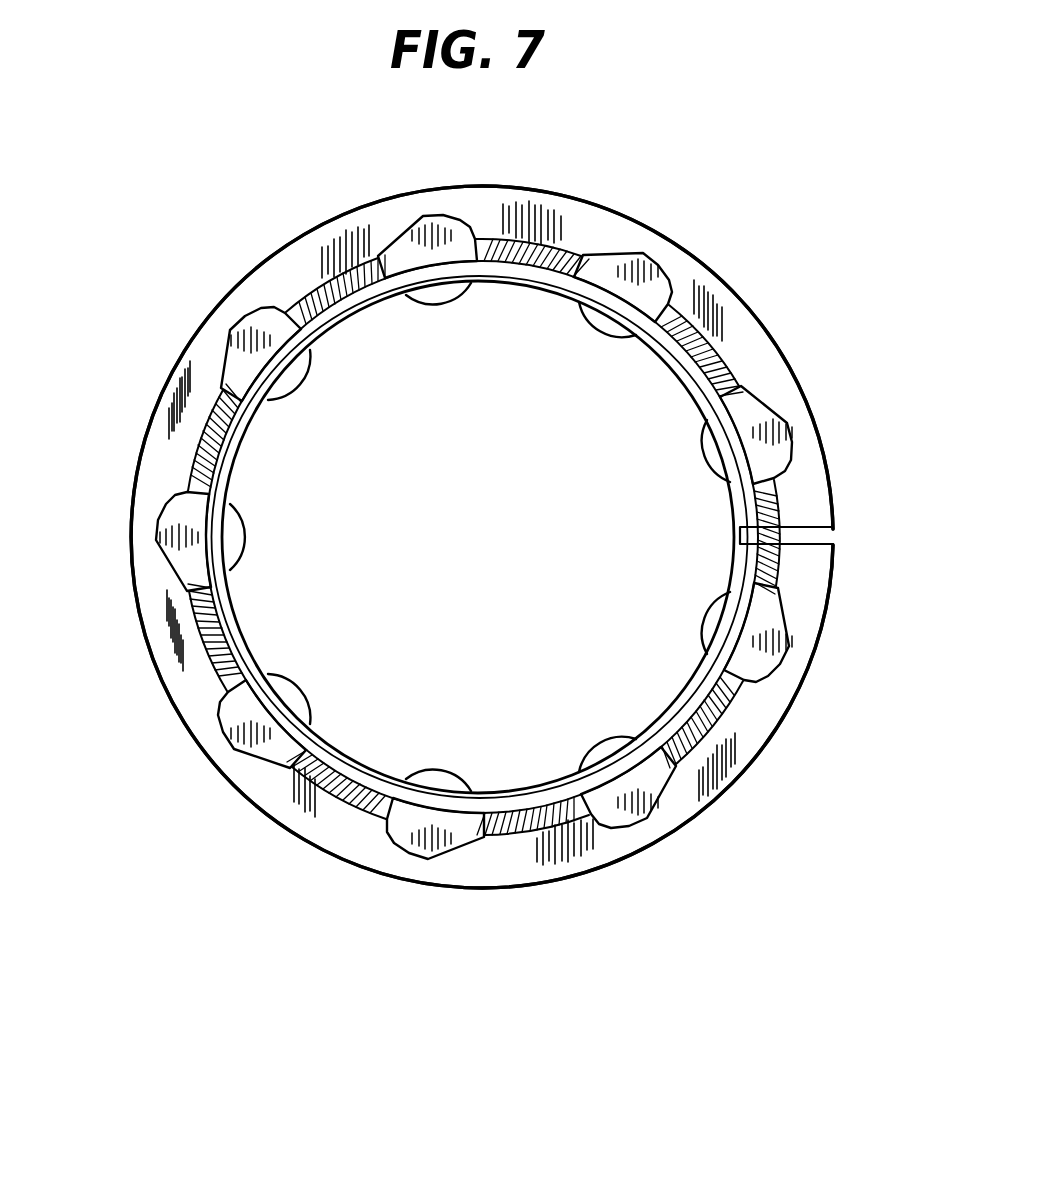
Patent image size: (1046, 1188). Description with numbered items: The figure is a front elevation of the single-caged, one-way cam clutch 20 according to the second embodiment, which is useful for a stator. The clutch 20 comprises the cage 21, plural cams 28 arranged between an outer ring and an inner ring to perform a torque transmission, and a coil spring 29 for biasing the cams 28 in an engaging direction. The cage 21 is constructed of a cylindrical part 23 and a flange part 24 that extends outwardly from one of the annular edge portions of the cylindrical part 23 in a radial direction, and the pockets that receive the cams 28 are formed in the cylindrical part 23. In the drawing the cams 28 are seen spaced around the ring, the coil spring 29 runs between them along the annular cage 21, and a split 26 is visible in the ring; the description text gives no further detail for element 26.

The single-caged, one-way cam clutch 20 is at (408, 901).
The cage 21 is at (781, 750).
The cylindrical part 23 is at (678, 707).
The flange part 24 is at (638, 835).
The slit 26 is at (833, 538).
The cams 28 is at (662, 277).
The coil spring 29 is at (292, 297).